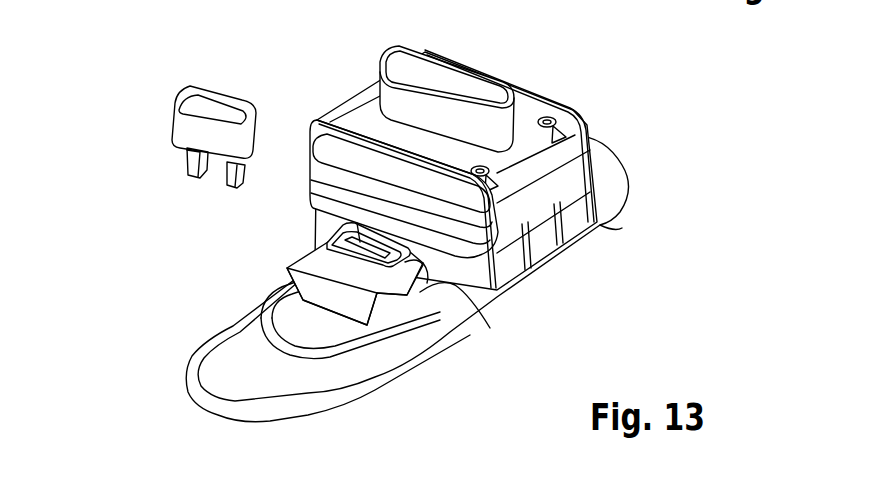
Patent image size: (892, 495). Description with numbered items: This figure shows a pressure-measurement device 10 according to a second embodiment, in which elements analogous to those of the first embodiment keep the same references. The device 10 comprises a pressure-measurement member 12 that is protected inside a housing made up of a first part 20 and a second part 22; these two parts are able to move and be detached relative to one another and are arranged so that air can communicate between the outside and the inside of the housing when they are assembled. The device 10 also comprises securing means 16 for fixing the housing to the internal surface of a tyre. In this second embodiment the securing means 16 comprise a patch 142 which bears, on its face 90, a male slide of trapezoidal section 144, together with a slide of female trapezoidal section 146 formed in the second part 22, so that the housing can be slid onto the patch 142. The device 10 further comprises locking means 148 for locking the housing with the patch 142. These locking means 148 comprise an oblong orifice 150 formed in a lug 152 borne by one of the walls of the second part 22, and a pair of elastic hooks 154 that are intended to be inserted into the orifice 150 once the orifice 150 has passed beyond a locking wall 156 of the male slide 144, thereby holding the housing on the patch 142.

The device 10 is at (375, 240).
The pressure-measurement member 12 is at (509, 158).
The securing means 16 is at (350, 308).
The first part 20 is at (517, 80).
The second part 22 is at (484, 270).
The face 90 is at (235, 397).
The patch 142 is at (308, 380).
The male slide of trapezoidal section 144 is at (369, 336).
The slide of female trapezoidal section 146 is at (447, 292).
The locking means 148 is at (299, 89).
The oblong orifice 150 is at (339, 316).
The lug 152 is at (387, 268).
The pair of elastic hooks 154 is at (179, 165).
The locking wall 156 is at (325, 298).